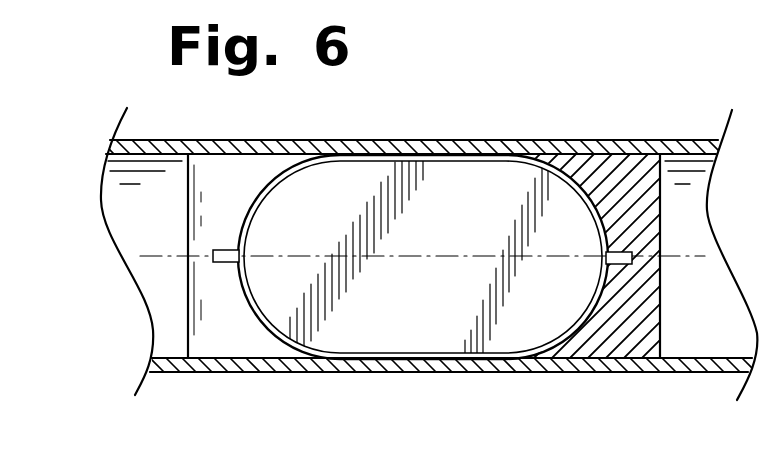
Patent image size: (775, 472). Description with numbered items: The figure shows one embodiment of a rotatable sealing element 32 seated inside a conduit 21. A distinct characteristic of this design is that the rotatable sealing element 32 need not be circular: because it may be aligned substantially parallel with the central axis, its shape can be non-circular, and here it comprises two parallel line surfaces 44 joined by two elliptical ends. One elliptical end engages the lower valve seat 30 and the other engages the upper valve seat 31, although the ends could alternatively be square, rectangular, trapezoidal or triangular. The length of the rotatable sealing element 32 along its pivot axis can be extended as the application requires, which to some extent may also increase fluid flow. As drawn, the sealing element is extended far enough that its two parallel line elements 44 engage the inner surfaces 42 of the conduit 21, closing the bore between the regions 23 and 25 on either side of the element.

The conduit 21 is at (669, 142).
The first chamber 23 is at (185, 205).
The second chamber 25 is at (661, 299).
The lower valve seat 30 is at (262, 190).
The upper valve seat 31 is at (588, 319).
The rotatable sealing element 32 is at (366, 176).
The inner surfaces 42 is at (178, 352).
The parallel line surfaces 44 is at (475, 143).